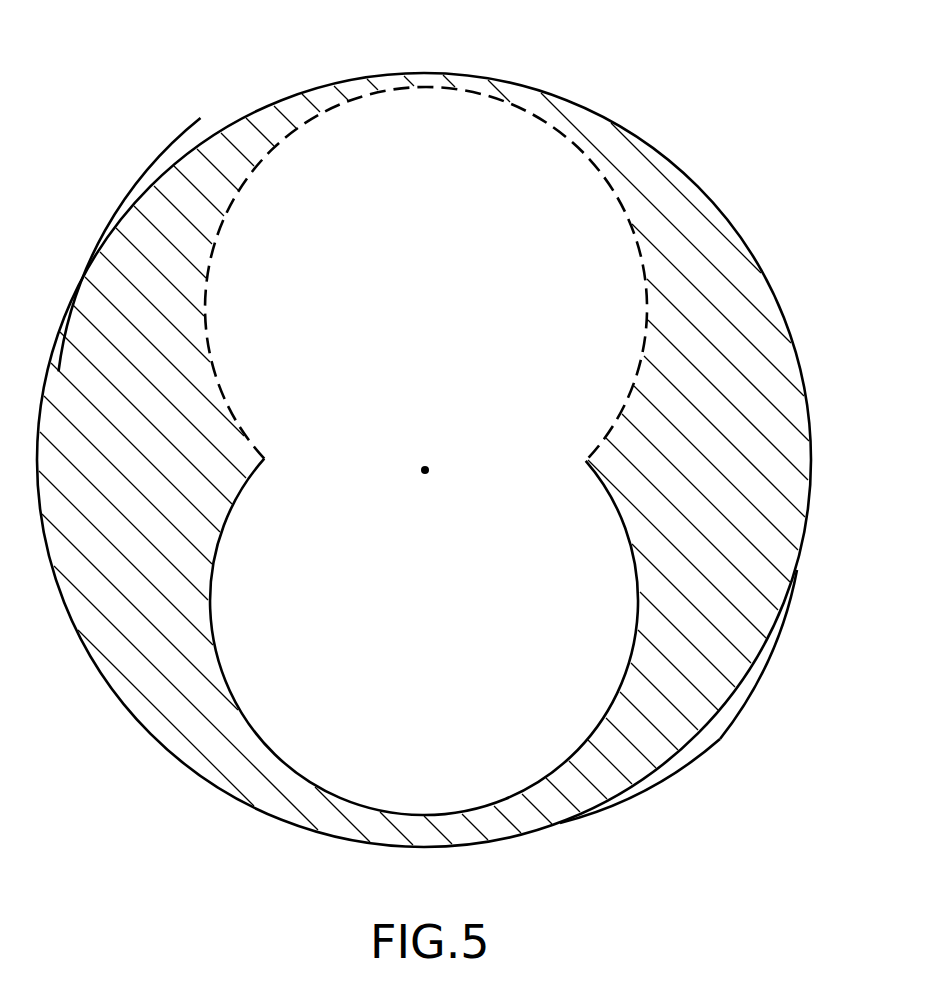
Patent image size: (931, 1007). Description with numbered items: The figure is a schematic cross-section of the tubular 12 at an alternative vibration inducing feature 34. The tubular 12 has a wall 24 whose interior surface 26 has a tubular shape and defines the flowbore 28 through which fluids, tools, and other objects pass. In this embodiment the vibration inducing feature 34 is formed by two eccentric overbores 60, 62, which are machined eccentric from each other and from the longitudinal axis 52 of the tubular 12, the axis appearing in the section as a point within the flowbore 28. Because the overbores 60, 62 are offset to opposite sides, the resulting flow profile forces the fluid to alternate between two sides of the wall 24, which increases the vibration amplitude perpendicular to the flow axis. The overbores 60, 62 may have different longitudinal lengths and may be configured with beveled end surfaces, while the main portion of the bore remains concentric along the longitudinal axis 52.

The tubular 12 is at (647, 190).
The wall 24 is at (675, 692).
The interior surface 26 is at (638, 617).
The flowbore 28 is at (491, 562).
The vibration inducing feature 34 is at (223, 305).
The longitudinal axis 52 is at (427, 467).
The eccentric overbore 60 is at (292, 163).
The eccentric overbore 62 is at (385, 612).